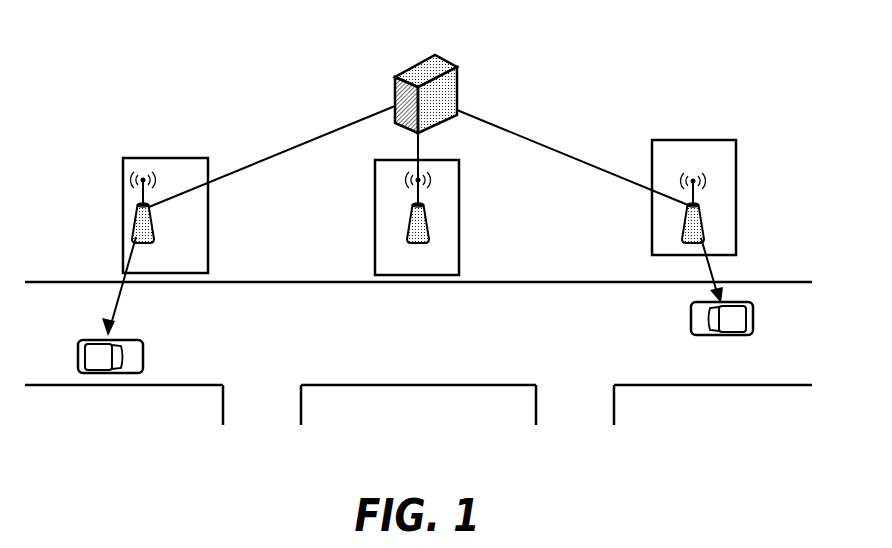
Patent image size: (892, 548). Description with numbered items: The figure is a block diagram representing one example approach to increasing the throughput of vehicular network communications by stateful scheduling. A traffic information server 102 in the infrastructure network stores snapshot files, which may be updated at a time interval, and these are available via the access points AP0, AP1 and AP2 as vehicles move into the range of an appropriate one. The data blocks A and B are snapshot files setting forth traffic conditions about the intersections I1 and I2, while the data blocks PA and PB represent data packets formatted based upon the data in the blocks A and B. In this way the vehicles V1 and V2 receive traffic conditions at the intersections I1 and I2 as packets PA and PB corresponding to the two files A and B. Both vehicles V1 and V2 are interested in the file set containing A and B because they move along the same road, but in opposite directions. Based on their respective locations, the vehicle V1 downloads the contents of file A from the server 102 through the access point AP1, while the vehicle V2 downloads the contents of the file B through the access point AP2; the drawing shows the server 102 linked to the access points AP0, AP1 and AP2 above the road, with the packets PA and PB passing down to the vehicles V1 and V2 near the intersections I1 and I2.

The traffic information server 102 is at (417, 70).
The access point AP0 is at (400, 271).
The access point AP1 is at (157, 271).
The access point AP2 is at (673, 167).
The data block A is at (256, 148).
The data block B is at (561, 142).
The data packet PA is at (152, 286).
The data packet PB is at (750, 270).
The vehicle V1 is at (93, 358).
The vehicle V2 is at (737, 323).
The intersection I1 is at (253, 388).
The intersection I2 is at (567, 388).